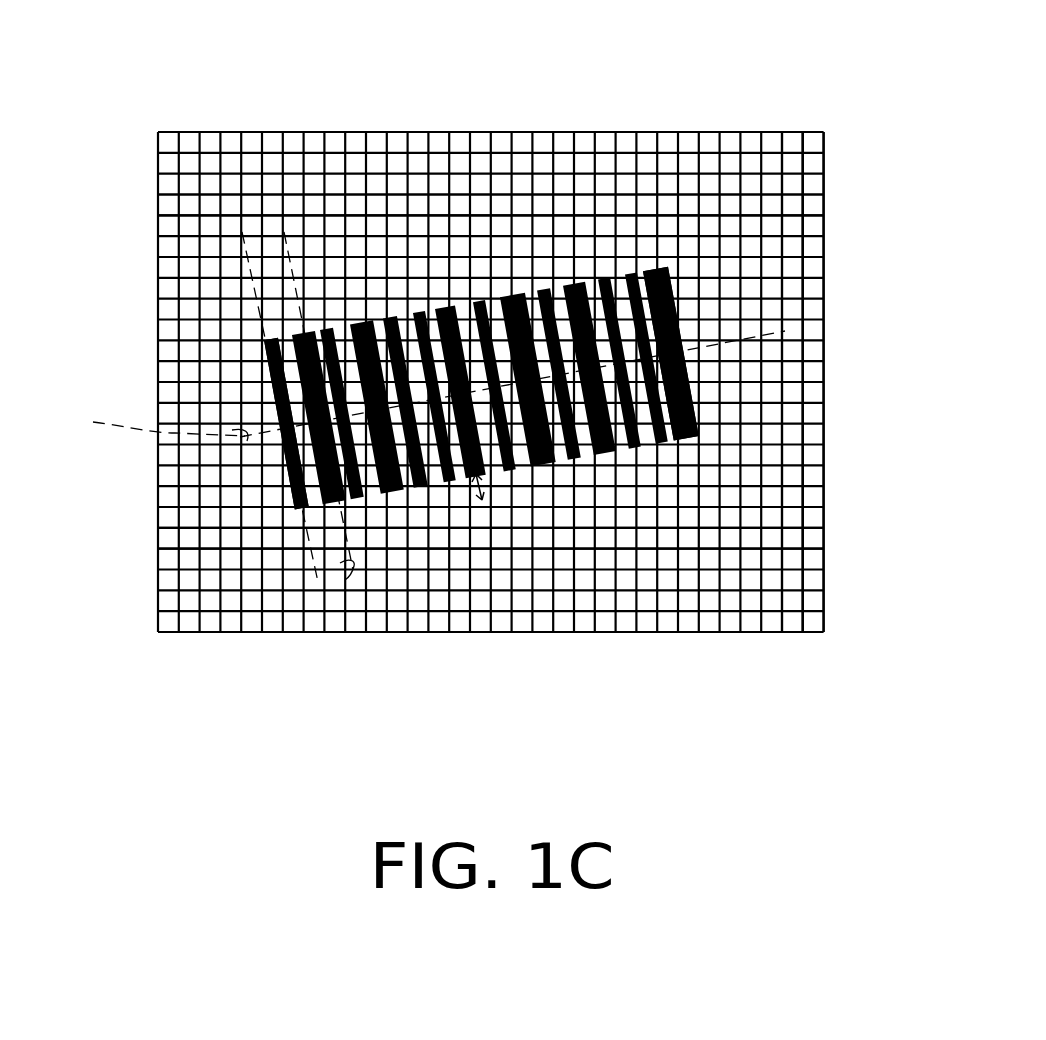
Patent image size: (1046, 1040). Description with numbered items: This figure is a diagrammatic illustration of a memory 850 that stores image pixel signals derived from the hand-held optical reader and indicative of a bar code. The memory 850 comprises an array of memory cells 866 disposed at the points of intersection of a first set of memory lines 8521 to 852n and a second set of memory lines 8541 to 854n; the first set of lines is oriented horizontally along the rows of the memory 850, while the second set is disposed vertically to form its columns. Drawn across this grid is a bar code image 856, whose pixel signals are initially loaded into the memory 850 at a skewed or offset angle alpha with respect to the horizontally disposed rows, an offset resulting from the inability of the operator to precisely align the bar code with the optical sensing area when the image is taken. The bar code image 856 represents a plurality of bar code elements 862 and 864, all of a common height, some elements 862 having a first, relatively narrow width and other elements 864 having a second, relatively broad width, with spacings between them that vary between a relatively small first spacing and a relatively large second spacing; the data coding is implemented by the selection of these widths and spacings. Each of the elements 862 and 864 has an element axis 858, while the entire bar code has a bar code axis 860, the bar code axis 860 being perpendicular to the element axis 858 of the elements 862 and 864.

The memory 850 is at (430, 125).
The memory cells 866 is at (180, 144).
The first memory line of the first set 8521 is at (812, 132).
The nth memory line of the first set 852n is at (792, 632).
The first memory line of the second set 8541 is at (158, 535).
The nth memory line of the second set 854n is at (825, 205).
The element axis 858 is at (243, 265).
The bar code elements of first, relatively narrow width 862 is at (263, 372).
The bar code axis 860 is at (143, 432).
The bar code elements of second, relatively broad width 864 is at (685, 367).
The bar code image 856 is at (690, 432).
The offset angle alpha is at (478, 500).